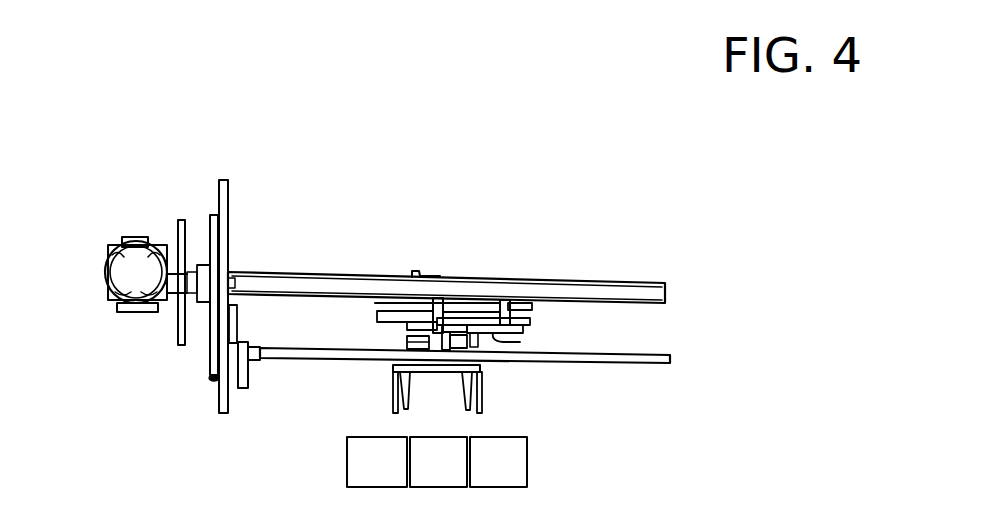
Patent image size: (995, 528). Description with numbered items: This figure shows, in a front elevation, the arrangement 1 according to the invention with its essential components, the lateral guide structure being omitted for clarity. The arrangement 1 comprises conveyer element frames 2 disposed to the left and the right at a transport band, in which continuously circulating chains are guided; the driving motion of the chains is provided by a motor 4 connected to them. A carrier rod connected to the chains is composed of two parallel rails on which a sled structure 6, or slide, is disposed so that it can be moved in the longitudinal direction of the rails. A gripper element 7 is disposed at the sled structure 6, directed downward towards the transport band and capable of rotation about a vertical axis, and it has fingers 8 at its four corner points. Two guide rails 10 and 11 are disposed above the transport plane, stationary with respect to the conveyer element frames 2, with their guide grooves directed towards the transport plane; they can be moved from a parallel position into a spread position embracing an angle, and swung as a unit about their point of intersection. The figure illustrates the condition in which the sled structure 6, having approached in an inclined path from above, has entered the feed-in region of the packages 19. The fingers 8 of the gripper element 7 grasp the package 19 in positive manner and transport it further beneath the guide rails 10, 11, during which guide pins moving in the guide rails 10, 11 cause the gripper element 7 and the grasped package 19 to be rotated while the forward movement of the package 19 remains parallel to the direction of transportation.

The arrangement 1 is at (433, 220).
The conveyer element frame 2 is at (210, 367).
The motor 4 is at (138, 285).
The sled structure 6 is at (383, 367).
The gripper element 7 is at (482, 385).
The fingers 8 is at (462, 398).
The guide rail 10 is at (493, 344).
The guide rail 11 is at (484, 323).
The package 19 is at (532, 473).